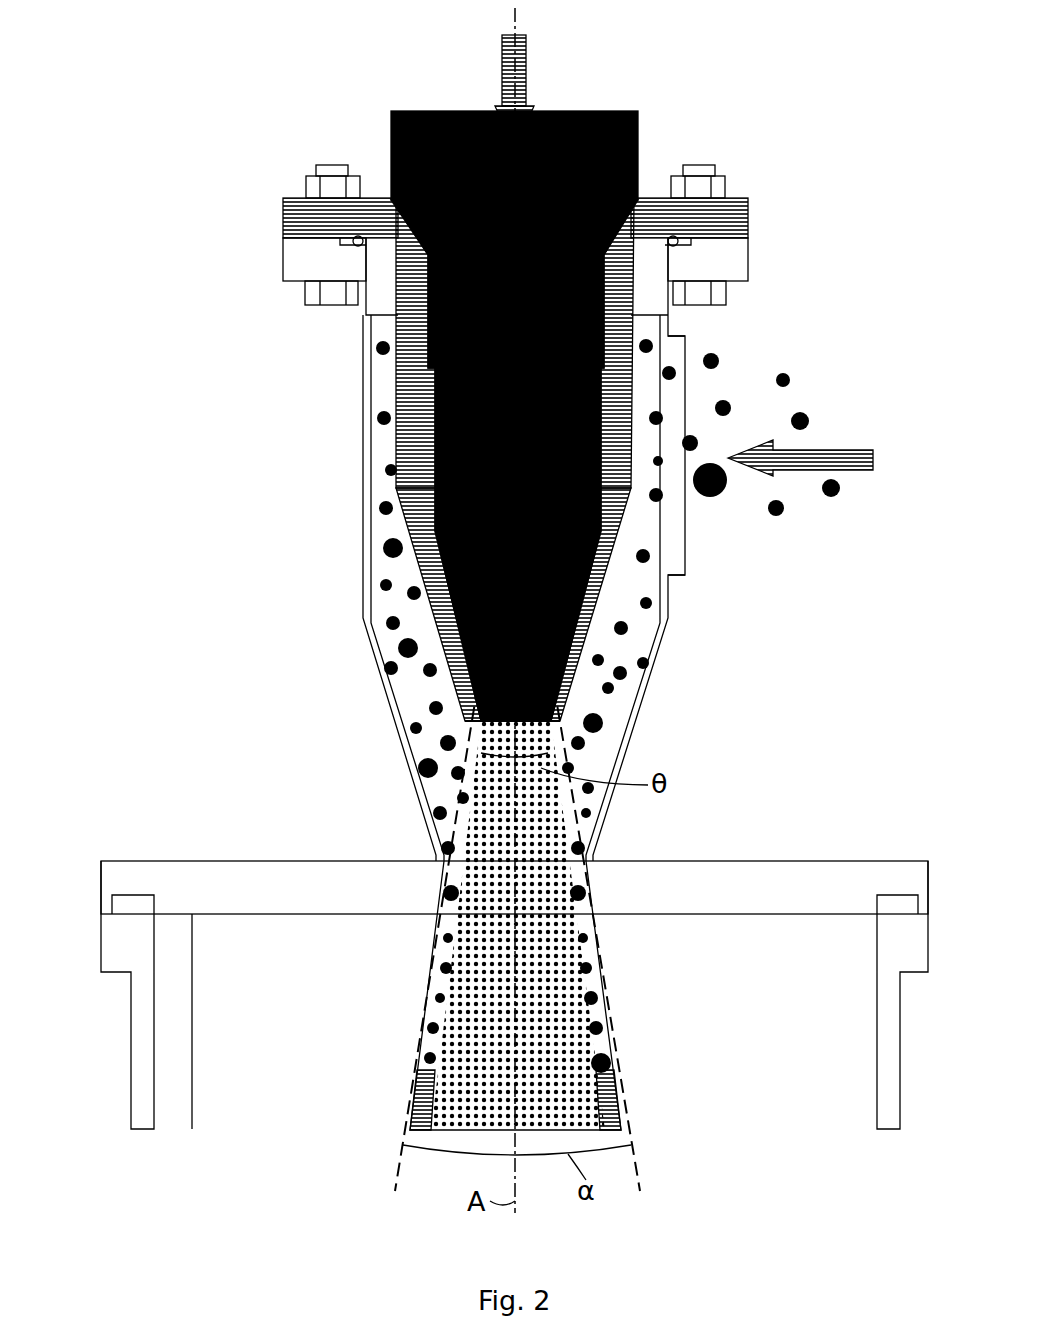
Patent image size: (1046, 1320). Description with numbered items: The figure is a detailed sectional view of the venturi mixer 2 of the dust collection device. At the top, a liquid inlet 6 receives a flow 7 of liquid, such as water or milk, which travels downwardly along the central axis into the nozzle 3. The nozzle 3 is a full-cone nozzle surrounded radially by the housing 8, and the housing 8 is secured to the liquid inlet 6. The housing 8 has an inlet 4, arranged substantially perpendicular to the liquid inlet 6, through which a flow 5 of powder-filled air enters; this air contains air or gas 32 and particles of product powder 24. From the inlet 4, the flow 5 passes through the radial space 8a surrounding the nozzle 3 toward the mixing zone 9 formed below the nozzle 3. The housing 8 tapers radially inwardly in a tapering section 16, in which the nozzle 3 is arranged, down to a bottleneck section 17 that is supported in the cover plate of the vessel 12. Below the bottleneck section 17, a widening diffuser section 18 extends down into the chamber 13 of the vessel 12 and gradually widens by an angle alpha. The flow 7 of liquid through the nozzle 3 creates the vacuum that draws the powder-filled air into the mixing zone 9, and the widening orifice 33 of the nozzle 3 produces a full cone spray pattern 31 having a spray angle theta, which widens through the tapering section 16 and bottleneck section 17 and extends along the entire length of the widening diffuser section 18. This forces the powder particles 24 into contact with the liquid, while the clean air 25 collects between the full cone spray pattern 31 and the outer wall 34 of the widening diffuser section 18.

The venturi mixer 2 is at (420, 343).
The nozzle 3 is at (460, 720).
The inlet 4 is at (675, 398).
The flow of powder-filled air 5 is at (811, 446).
The liquid inlet 6 is at (383, 128).
The flow of liquid 7 is at (494, 48).
The housing 8 is at (363, 518).
The radial space 8a is at (633, 582).
The mixing zone 9 is at (548, 831).
The vessel 12 is at (123, 1030).
The chamber 13 is at (848, 1078).
The tapering section 16 is at (384, 687).
The bottleneck section 17 is at (431, 889).
The widening diffuser section 18 is at (430, 977).
The powder particles 24 is at (782, 368).
The clean air 25 is at (430, 1020).
The full cone spray pattern 31 is at (493, 780).
The air or gas 32 is at (711, 351).
The widening orifice 33 is at (473, 707).
The outer wall 34 is at (403, 1078).